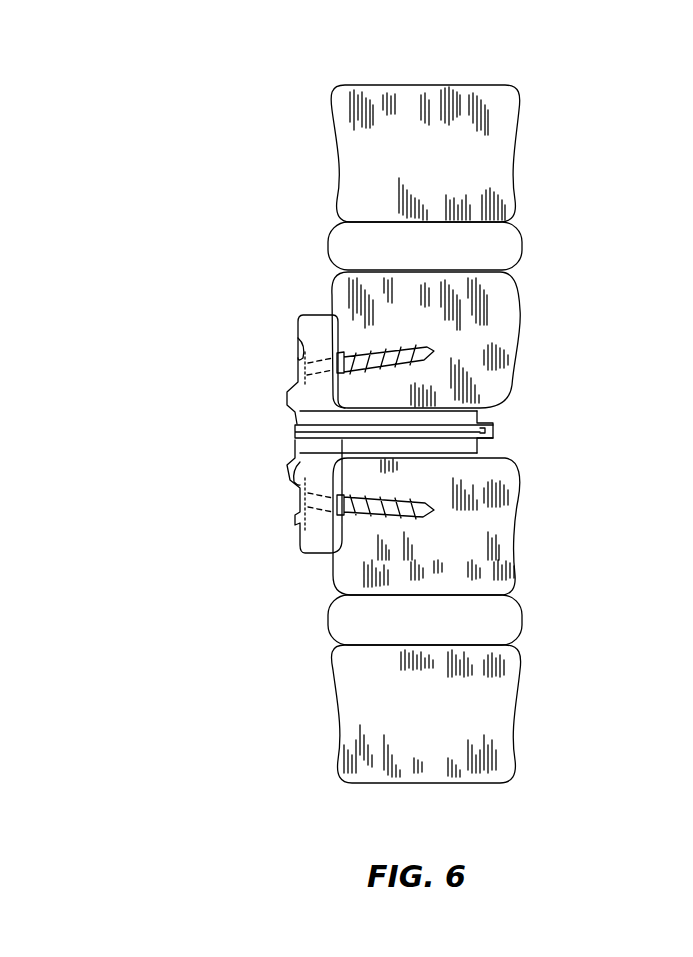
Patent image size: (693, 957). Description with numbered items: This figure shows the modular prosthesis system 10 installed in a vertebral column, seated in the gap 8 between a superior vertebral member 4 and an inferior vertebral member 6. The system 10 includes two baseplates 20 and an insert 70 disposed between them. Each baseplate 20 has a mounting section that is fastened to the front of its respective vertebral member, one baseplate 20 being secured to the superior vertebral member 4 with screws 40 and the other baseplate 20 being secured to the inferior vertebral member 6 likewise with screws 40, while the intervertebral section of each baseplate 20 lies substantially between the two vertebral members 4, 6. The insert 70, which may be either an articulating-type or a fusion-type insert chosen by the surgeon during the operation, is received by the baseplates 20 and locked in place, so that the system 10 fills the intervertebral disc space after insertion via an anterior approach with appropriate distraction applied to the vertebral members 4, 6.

The modular prosthesis system 10 is at (232, 296).
The baseplate 20 is at (266, 377).
The screw 40 is at (383, 353).
The insert 70 is at (288, 432).
The superior vertebral member 4 is at (467, 338).
The inferior vertebral member 6 is at (470, 517).
The gap 8 is at (524, 430).